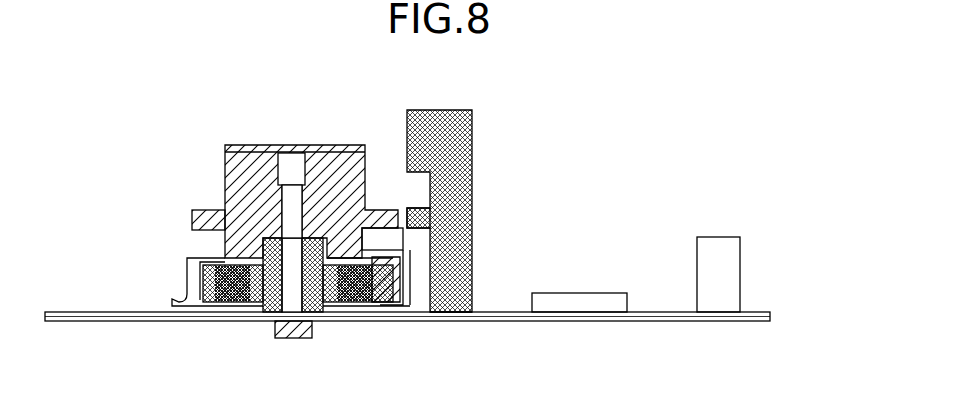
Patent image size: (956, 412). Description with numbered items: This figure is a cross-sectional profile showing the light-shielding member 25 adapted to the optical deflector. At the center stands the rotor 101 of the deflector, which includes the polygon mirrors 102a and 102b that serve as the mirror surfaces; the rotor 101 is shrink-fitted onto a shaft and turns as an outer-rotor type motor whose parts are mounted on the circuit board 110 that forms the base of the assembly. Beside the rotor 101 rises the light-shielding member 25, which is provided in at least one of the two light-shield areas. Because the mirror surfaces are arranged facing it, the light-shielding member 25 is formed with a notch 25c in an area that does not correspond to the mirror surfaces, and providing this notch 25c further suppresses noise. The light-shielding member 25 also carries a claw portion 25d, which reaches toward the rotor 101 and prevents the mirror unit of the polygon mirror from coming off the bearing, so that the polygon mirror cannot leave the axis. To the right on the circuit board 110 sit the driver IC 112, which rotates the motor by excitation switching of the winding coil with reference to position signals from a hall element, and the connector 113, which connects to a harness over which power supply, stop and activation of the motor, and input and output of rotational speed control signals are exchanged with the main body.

The rotor 101 is at (255, 145).
The polygon mirror 102a is at (268, 194).
The polygon mirror 102b is at (251, 252).
The light-shielding member 25 is at (480, 206).
The notch 25c is at (477, 195).
The claw portion 25d is at (475, 263).
The driver IC 112 is at (585, 278).
The connector 113 is at (763, 274).
The circuit board 110 is at (407, 337).